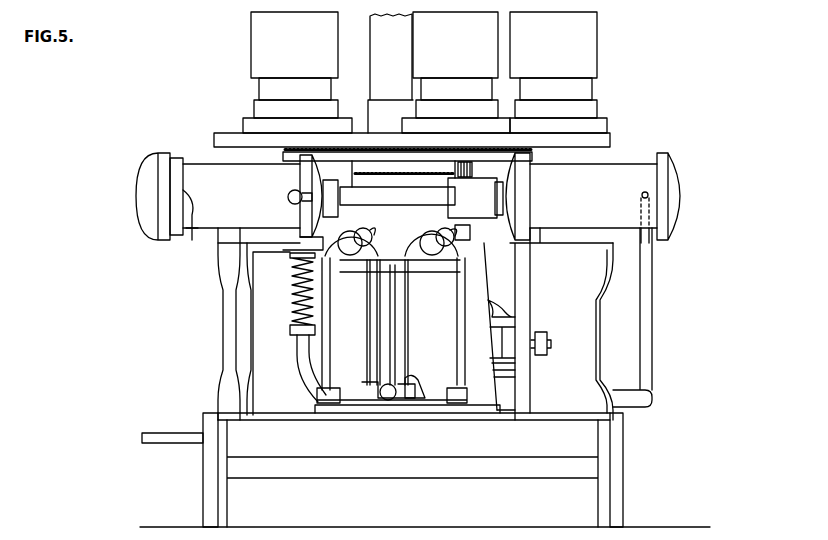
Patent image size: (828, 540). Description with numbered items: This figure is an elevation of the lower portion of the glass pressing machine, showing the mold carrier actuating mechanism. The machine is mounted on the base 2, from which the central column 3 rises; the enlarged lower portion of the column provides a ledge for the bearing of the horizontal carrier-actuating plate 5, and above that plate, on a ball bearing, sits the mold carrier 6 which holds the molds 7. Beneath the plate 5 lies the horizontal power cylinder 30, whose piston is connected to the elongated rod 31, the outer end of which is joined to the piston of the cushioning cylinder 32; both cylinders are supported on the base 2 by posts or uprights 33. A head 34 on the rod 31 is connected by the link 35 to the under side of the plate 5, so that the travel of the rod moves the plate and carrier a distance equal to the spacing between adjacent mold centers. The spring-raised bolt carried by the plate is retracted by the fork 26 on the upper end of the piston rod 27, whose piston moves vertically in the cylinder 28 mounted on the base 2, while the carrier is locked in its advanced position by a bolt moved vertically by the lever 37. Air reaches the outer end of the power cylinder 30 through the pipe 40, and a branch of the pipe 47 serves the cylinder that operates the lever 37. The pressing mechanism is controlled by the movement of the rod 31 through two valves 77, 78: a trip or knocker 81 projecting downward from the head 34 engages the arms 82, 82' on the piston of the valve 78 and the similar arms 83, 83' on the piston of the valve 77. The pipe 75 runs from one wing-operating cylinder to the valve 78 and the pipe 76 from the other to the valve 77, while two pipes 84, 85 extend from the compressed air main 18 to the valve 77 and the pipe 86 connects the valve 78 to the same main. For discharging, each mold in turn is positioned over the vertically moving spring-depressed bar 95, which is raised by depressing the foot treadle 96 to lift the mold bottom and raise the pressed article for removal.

The base 2 is at (425, 470).
The central column 3 is at (372, 57).
The carrier-actuating plate 5 is at (487, 158).
The mold carrier 6 is at (602, 147).
The mold 7 is at (255, 57).
The compressed air main 18 is at (403, 397).
The fork 26 is at (512, 305).
The piston rod 27 is at (512, 347).
The cylinder 28 is at (507, 395).
The power cylinder 30 is at (620, 170).
The elongated rod 31 is at (397, 197).
The cushioning cylinder 32 is at (190, 167).
The posts or uprights 33 is at (228, 318).
The head 34 is at (472, 198).
The link 35 is at (493, 170).
The lever 37 is at (541, 337).
The pipe 40 is at (643, 347).
The pipe 47 is at (310, 373).
The pipe 75 is at (460, 333).
The pipe 76 is at (358, 397).
The valve 77 is at (362, 256).
The valve 78 is at (440, 262).
The trip or knocker 81 is at (465, 232).
The arm 82 is at (431, 235).
The arm 82' is at (471, 252).
The arm 83 is at (330, 222).
The arm 83' is at (373, 232).
The pipe 84 is at (372, 356).
The pipe 85 is at (390, 336).
The pipe 86 is at (408, 339).
The spring-depressed bar 95 is at (300, 350).
The foot treadle 96 is at (180, 428).